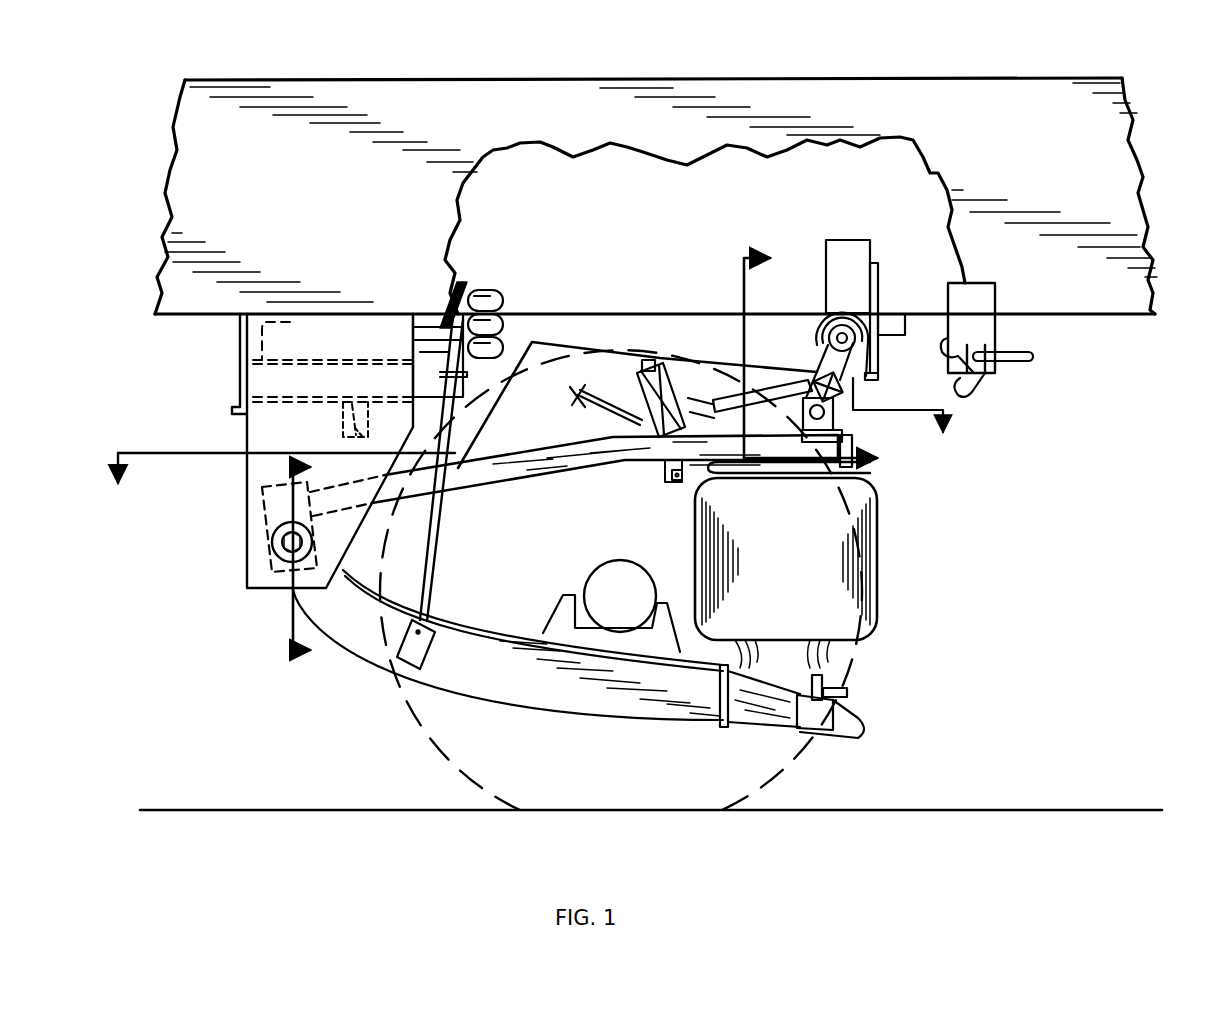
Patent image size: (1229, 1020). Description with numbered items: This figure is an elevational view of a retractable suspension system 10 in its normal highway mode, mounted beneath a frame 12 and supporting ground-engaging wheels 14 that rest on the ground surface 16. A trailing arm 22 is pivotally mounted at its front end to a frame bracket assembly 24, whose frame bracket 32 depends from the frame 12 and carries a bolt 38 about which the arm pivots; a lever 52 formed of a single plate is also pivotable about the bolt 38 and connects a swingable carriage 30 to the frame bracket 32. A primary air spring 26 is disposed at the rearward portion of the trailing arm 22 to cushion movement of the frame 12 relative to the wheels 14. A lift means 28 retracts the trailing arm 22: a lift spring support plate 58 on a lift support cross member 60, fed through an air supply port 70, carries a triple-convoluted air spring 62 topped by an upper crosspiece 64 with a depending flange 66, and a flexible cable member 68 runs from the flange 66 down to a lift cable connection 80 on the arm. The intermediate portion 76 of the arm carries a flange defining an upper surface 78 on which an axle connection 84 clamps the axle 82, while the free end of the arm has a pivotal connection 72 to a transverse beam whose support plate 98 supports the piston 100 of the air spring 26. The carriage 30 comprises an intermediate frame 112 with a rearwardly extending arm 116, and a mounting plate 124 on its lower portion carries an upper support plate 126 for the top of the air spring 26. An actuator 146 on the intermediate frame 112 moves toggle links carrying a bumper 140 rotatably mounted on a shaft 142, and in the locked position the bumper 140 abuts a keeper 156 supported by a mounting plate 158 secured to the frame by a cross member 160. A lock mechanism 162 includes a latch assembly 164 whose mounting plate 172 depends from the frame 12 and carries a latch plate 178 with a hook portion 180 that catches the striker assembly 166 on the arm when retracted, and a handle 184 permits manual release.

The suspension system 10 is at (943, 562).
The frame 12 is at (1090, 143).
The ground-engaging wheels 14 is at (432, 745).
The ground surface 16 is at (232, 808).
The trailing arm 22 is at (636, 700).
The frame bracket assembly 24 is at (238, 525).
The primary air spring 26 is at (805, 518).
The lift means 28 is at (517, 328).
The swingable carriage 30 is at (617, 480).
The frame bracket 32 is at (268, 447).
The bolt 38 is at (280, 553).
The lever 52 is at (273, 493).
The lift spring support plate 58 is at (427, 385).
The lift support cross member 60 is at (352, 396).
The air spring 62 is at (478, 297).
The upper crosspiece 64 is at (462, 283).
The flange 66 is at (432, 323).
The flexible cable member 68 is at (432, 523).
The air supply port 70 is at (343, 432).
The pivotal connection 72 is at (777, 737).
The intermediate portion 76 is at (478, 675).
The upper surface 78 is at (467, 625).
The lift cable connection 80 is at (428, 620).
The axle 82 is at (637, 577).
The axle connection 84 is at (552, 593).
The support plate 98 is at (845, 703).
The piston 100 is at (845, 688).
The intermediate frame 112 is at (548, 447).
The arm 116 is at (527, 470).
The mounting plate 124 is at (850, 457).
The upper support plate 126 is at (865, 472).
The bumper 140 is at (828, 322).
The shaft 142 is at (852, 327).
The actuator 146 is at (672, 383).
The keeper 156 is at (870, 372).
The mounting plate 158 is at (877, 274).
The cross member 160 is at (840, 258).
The lock mechanism 162 is at (967, 405).
The latch assembly 164 is at (1008, 288).
The striker assembly 166 is at (880, 738).
The mounting plate 172 is at (983, 327).
The latch plate 178 is at (952, 347).
The hook portion 180 is at (975, 385).
The handle 184 is at (1025, 363).